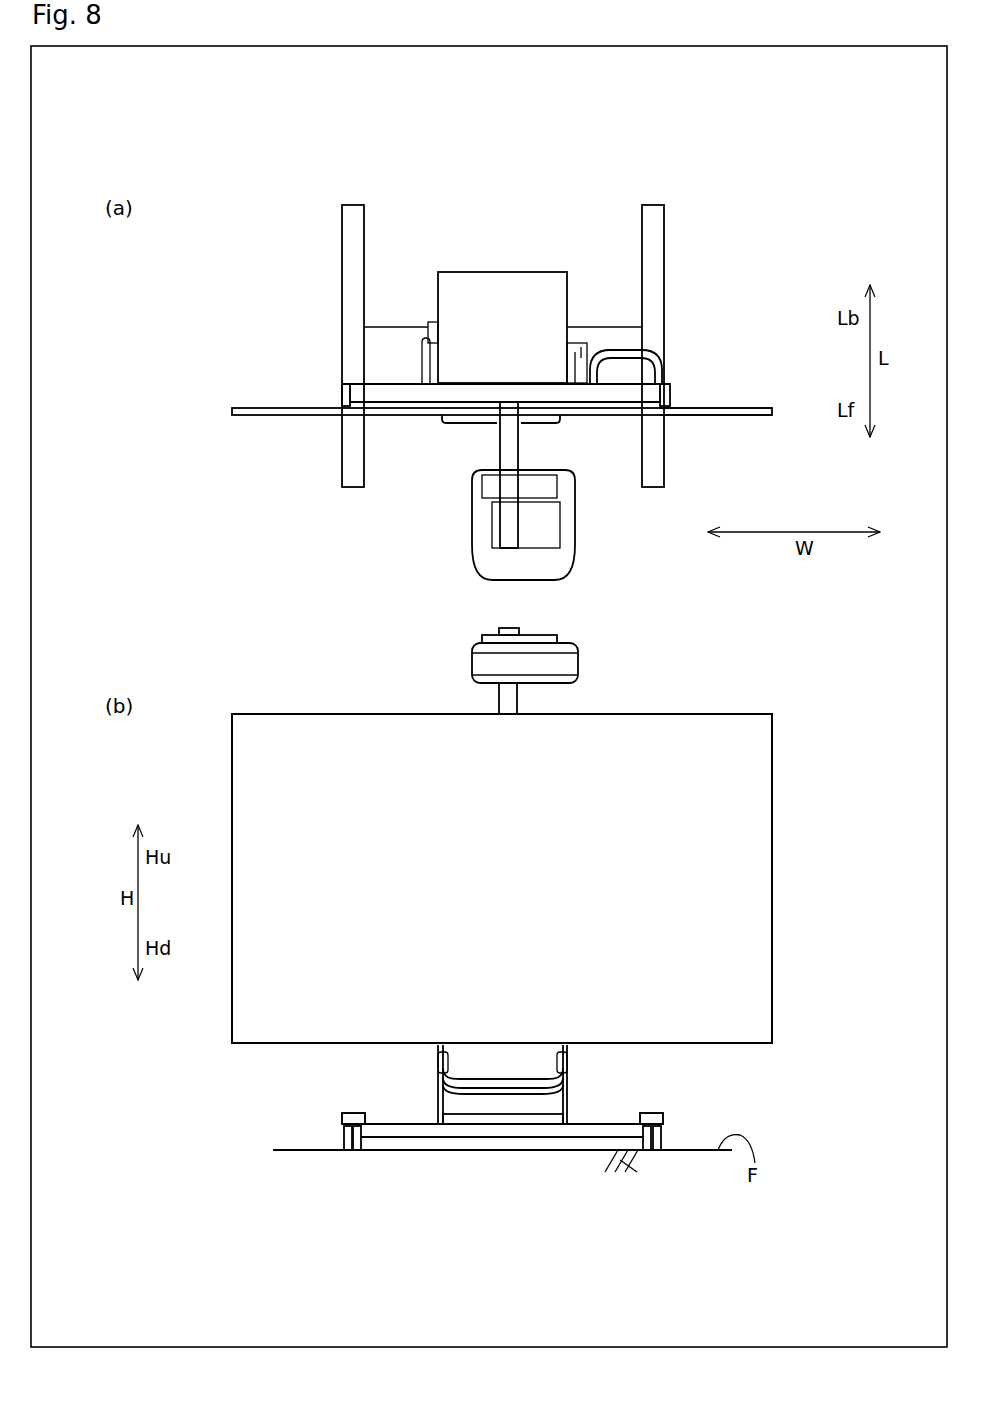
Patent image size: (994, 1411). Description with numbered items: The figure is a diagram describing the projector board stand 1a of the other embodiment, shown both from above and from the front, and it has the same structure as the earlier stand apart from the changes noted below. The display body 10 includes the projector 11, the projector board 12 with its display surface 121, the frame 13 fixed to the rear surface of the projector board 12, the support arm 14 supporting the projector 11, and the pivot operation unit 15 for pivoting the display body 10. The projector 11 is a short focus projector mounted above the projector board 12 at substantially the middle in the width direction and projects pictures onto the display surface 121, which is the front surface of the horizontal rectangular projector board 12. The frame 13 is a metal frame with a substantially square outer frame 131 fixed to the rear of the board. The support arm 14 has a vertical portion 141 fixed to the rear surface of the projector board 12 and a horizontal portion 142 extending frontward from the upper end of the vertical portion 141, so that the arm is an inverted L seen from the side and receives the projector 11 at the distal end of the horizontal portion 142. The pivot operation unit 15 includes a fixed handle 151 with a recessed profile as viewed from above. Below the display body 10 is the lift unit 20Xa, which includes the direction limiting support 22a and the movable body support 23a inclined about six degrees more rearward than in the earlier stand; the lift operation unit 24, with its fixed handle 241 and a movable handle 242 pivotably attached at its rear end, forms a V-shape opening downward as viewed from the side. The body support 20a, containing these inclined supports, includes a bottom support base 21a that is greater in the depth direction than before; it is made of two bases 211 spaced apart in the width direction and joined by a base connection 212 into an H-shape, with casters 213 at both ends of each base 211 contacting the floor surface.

The projector board stand 1a is at (784, 281).
The display body 10 is at (258, 418).
The projector 11 is at (578, 495).
The projector board 12 is at (758, 408).
The display surface 121 is at (723, 418).
The outer frame 131 is at (462, 451).
The frame 13 is at (368, 393).
The support arm 14 is at (510, 452).
The vertical portion 141 is at (500, 700).
The horizontal portion 142 is at (448, 533).
The fixed handle 151 is at (681, 349).
The pivot operation unit 15 is at (627, 352).
The lift unit 20Xa is at (615, 659).
The body support 20a is at (490, 292).
The bottom support base 21a is at (678, 252).
The base 211 is at (342, 1117).
The base connection 212 is at (345, 347).
The caster 213 is at (345, 1138).
The direction limiting support 22a is at (535, 1120).
The movable body support 23a is at (555, 1103).
The lift operation unit 24 is at (393, 1064).
The fixed handle 241 is at (471, 420).
The movable handle 242 is at (470, 1095).